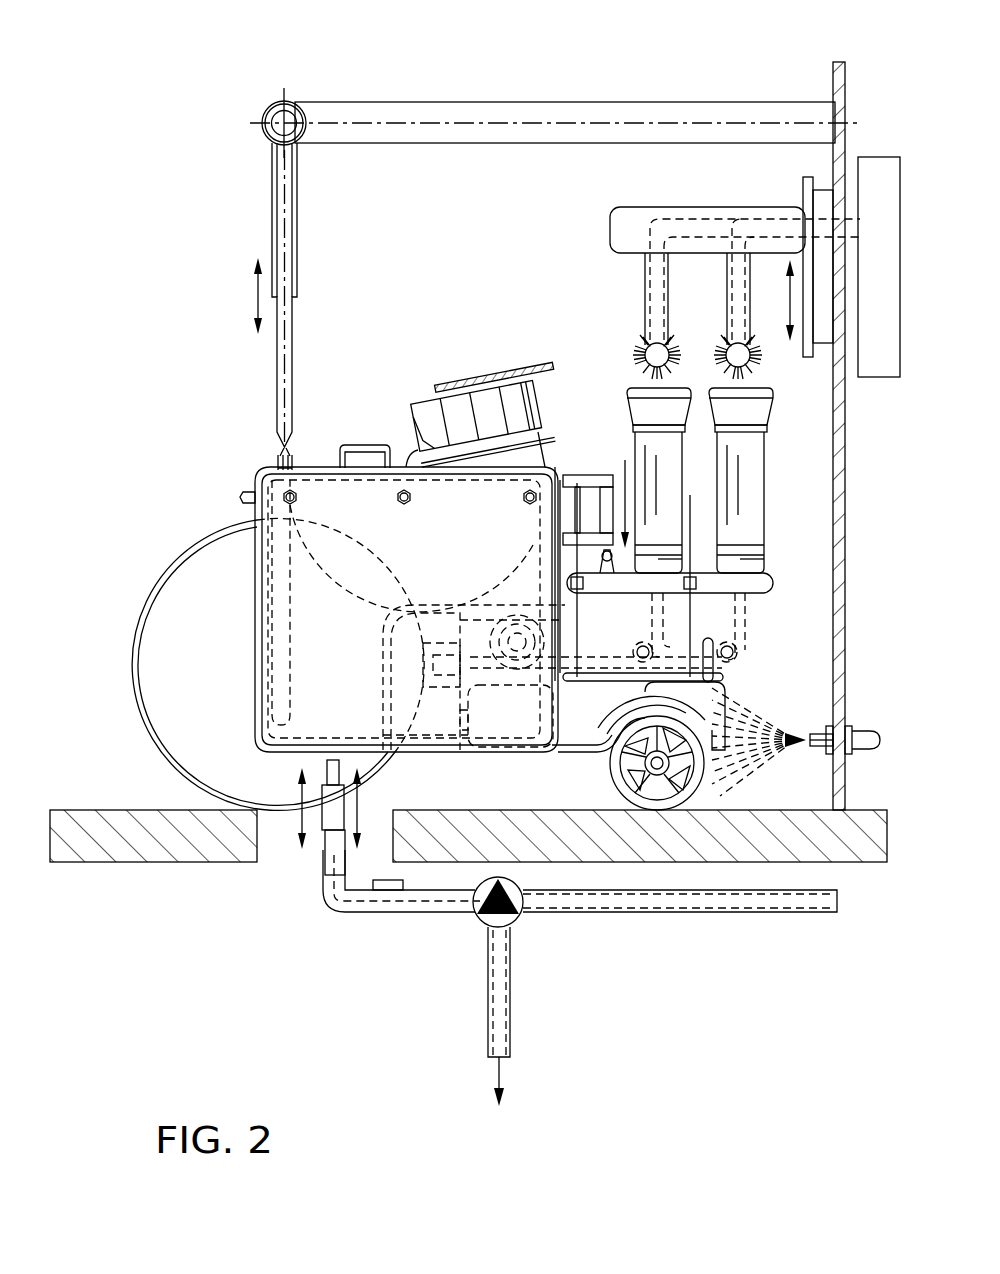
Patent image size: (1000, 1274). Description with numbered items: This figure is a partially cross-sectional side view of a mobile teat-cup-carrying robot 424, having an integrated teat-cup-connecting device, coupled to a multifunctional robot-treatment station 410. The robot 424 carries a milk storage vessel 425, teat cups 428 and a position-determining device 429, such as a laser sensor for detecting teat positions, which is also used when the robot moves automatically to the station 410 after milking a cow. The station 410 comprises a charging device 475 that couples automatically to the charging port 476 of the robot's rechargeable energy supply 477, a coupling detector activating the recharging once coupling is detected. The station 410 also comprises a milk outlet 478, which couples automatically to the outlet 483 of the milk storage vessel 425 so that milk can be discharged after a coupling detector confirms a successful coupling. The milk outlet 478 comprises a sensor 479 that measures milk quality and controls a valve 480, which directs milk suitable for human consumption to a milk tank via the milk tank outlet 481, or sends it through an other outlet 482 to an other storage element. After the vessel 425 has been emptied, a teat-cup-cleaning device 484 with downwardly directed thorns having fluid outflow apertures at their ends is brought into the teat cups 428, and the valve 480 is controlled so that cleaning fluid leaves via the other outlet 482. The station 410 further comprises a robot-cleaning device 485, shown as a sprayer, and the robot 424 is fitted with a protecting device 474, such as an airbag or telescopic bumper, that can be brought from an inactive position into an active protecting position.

The multifunctional robot-treatment station 410 is at (801, 68).
The teat-cup-carrying robot 424 is at (212, 499).
The milk storage vessel 425 is at (532, 550).
The teat cups 428 is at (661, 469).
The position-determining device 429 is at (450, 373).
The protecting device 474 is at (707, 691).
The charging device 475 is at (387, 68).
The charging port 476 is at (287, 465).
The rechargeable energy supply 477 is at (275, 632).
The milk outlet 478 is at (445, 903).
The sensor 479 is at (388, 885).
The valve 480 is at (502, 916).
The milk tank outlet 481 is at (502, 996).
The other outlet 482 is at (776, 902).
The outlet of the milk storage vessel 483 is at (333, 732).
The teat-cup-cleaning device 484 is at (604, 296).
The robot-cleaning device 485 is at (817, 735).